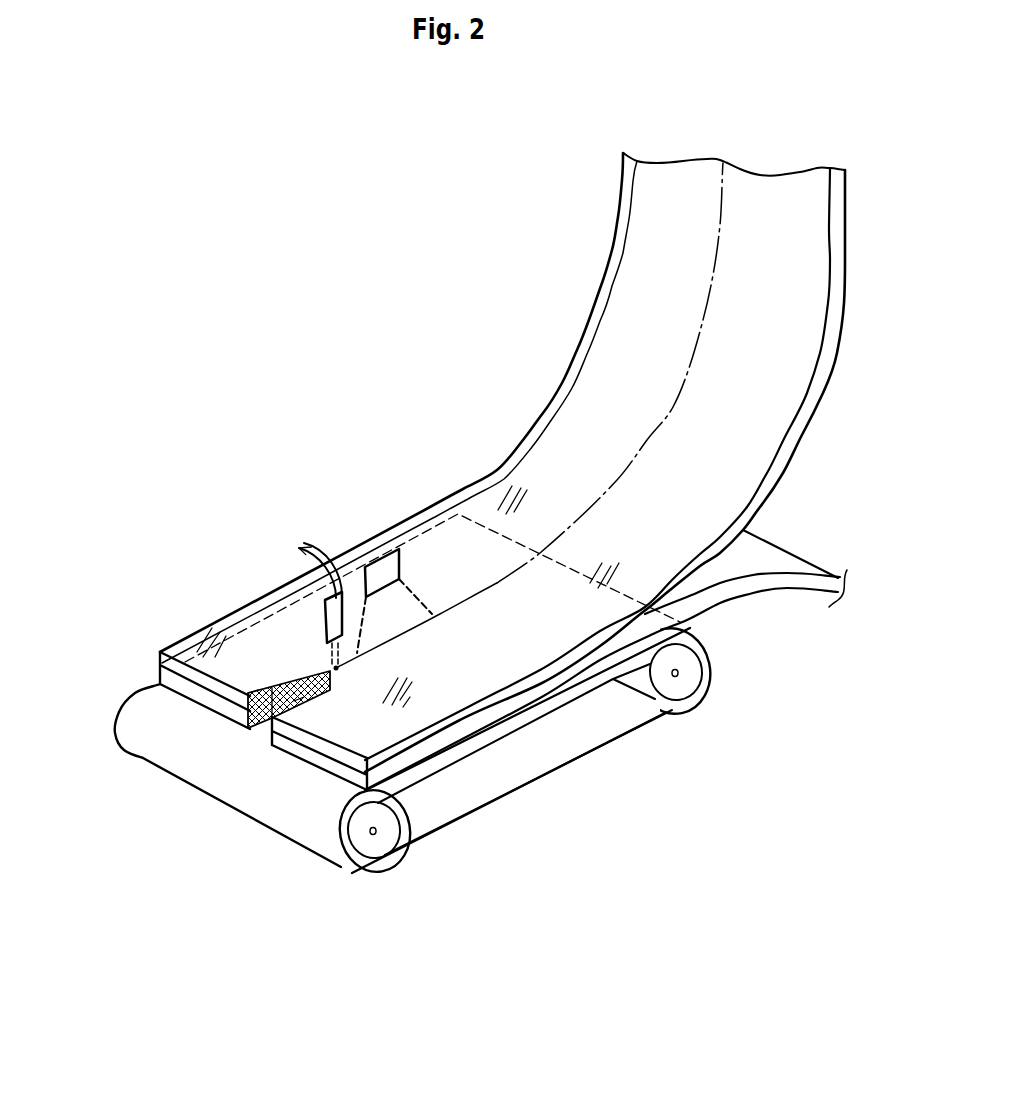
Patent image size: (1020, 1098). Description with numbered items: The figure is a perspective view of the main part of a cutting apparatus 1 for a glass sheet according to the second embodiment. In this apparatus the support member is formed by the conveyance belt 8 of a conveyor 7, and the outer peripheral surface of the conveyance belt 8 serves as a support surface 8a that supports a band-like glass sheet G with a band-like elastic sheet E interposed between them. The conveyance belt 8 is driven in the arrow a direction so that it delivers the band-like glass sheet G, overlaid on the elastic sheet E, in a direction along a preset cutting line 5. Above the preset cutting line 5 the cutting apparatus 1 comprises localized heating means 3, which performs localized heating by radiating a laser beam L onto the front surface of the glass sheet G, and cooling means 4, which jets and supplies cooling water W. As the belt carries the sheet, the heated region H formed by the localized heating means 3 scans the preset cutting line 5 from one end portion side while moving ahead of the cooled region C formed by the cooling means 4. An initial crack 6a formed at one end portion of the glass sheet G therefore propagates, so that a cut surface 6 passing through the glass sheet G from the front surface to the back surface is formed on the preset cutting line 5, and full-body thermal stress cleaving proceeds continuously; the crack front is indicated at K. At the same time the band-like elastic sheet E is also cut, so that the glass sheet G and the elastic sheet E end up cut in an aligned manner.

The cutting apparatus 1 is at (257, 478).
The localized heating means 3 is at (386, 556).
The cooling means 4 is at (340, 592).
The preset cutting line 5 is at (612, 482).
The cut surface 6 is at (290, 688).
The initial crack 6a is at (262, 694).
The conveyor 7 is at (600, 718).
The conveyance belt 8 is at (158, 748).
The support surface 8a is at (153, 687).
The glass sheet G is at (533, 458).
The laser beam L is at (426, 603).
The heated region H is at (410, 631).
The cooled region C is at (338, 668).
The cooling water W is at (332, 666).
The crack K is at (264, 728).
The arrow direction a is at (258, 746).
The elastic sheet E is at (763, 557).